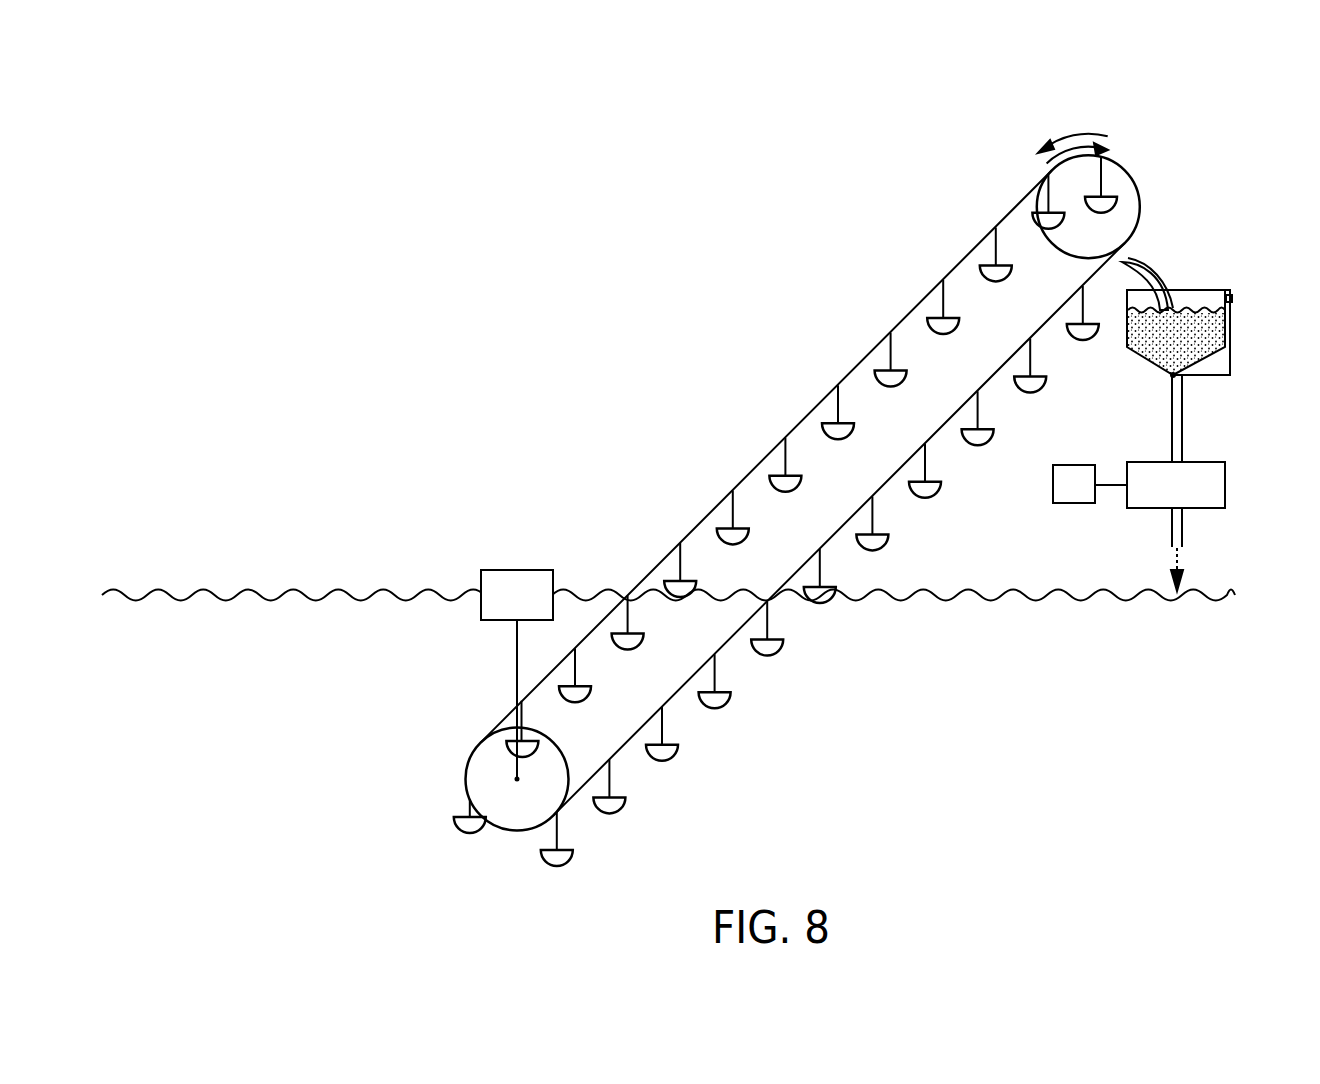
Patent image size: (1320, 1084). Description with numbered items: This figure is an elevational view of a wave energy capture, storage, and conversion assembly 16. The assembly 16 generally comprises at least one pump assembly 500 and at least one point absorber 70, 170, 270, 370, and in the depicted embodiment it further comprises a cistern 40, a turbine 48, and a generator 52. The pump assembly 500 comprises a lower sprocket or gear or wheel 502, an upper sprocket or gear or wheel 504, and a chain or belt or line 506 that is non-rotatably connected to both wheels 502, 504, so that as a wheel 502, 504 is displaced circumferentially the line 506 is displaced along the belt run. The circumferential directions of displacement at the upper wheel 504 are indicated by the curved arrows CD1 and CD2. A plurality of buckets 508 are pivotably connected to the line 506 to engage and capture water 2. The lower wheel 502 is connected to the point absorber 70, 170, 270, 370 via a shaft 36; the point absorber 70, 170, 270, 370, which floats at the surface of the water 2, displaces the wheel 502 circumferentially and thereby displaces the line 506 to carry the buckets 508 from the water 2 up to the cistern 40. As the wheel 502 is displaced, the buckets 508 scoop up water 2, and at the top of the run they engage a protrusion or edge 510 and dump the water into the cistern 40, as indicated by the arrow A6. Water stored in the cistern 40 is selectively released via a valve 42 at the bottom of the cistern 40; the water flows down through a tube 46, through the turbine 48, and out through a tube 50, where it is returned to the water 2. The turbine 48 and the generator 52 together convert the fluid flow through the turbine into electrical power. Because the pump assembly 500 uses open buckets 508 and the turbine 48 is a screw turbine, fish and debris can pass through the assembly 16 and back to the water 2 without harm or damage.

The water 2 is at (206, 610).
The assembly 16 is at (791, 503).
The shaft 36 is at (517, 779).
The cistern 40 is at (1125, 332).
The valve 42 is at (1170, 376).
The tube 46 is at (1182, 402).
The turbine 48 is at (1207, 462).
The tube 50 is at (1182, 527).
The generator 52 is at (1093, 465).
The point absorber 70 is at (469, 621).
The point absorber 170 is at (469, 621).
The point absorber 270 is at (469, 621).
The point absorber 370 is at (513, 551).
The pump assembly 500 is at (967, 223).
The sprocket or gear or wheel 502 is at (520, 807).
The sprocket or gear or wheel 504 is at (1124, 198).
The chain or belt or line 506 is at (884, 336).
The buckets 508 is at (831, 424).
The protrusion or edge 510 is at (1130, 283).
The conveyor direction 1 CD1 is at (1062, 133).
The conveyor direction 2 CD2 is at (1083, 134).
The arrow A6 is at (1146, 278).